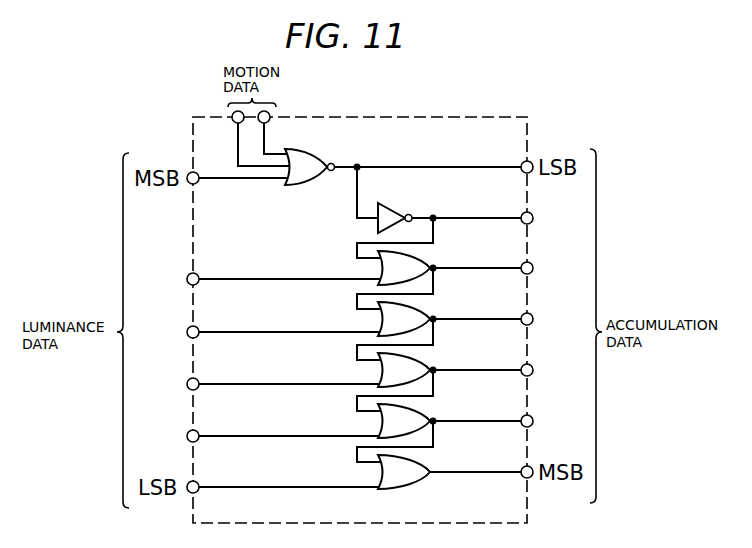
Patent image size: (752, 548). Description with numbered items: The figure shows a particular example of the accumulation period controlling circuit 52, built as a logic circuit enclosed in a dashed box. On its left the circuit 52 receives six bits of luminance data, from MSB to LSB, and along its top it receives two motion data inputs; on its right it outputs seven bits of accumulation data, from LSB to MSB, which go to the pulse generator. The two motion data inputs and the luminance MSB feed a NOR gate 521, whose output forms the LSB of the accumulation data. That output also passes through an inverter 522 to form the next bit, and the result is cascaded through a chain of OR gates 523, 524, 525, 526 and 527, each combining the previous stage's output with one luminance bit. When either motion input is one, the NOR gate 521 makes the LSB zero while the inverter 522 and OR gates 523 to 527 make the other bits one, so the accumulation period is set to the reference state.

The accumulation period controlling circuit 52 is at (486, 114).
The NOR gate 521 is at (325, 158).
The inverter 522 is at (403, 205).
The OR gate 523 is at (426, 258).
The OR gate 524 is at (421, 310).
The OR gate 525 is at (421, 362).
The OR gate 526 is at (421, 412).
The OR gate 527 is at (421, 463).